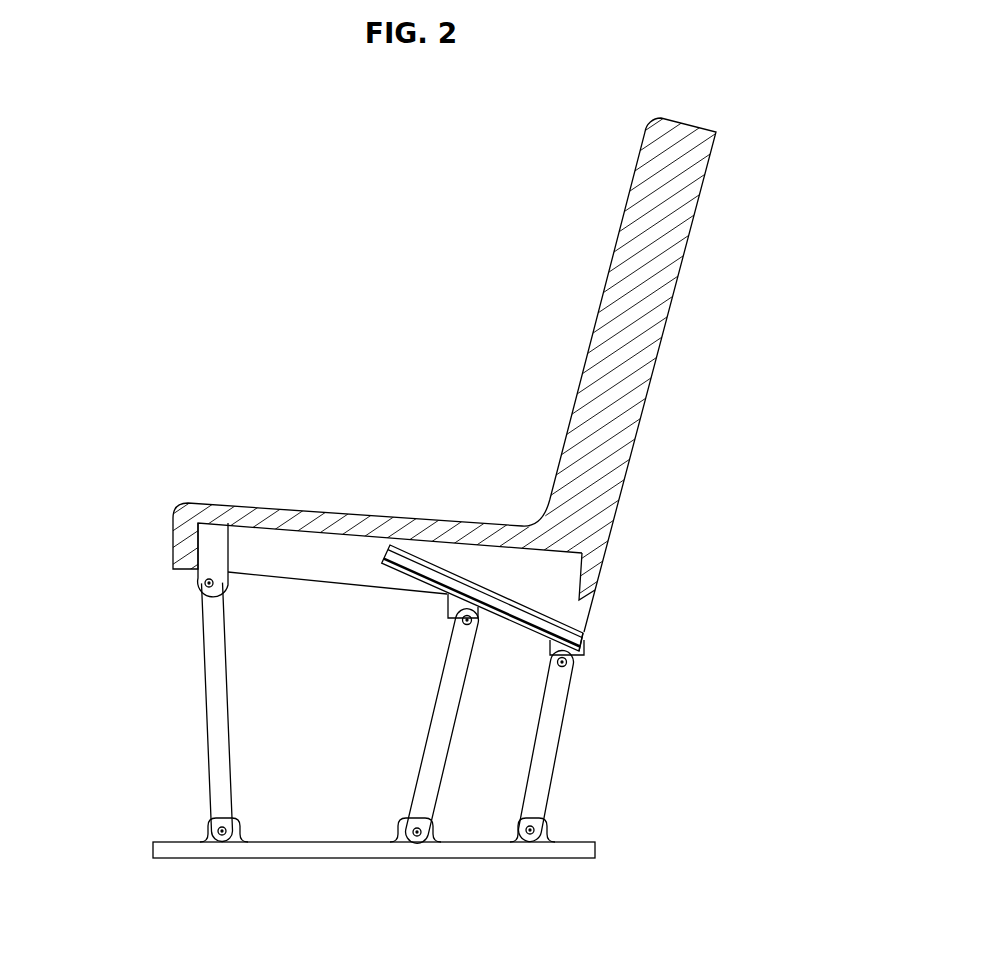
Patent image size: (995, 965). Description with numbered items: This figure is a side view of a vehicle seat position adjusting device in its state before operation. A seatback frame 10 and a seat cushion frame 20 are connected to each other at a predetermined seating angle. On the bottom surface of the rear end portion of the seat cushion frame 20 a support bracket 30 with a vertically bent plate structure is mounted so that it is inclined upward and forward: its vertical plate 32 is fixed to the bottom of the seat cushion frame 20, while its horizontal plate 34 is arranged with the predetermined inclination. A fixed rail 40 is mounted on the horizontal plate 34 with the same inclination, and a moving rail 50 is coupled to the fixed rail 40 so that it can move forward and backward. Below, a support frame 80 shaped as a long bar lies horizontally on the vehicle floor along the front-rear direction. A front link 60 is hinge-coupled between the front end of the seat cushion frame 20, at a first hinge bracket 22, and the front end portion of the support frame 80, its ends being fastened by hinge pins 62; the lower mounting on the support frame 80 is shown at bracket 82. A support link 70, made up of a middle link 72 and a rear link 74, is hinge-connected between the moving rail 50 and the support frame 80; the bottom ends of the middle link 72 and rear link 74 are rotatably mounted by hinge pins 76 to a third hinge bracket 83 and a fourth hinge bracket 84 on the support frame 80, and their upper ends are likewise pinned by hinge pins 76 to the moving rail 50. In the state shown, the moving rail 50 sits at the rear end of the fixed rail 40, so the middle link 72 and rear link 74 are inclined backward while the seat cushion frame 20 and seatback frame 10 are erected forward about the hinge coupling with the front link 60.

The seatback frame 10 is at (603, 327).
The seat cushion frame 20 is at (338, 524).
The first hinge bracket 22 is at (205, 560).
The support bracket 30 is at (694, 537).
The vertical plate 32 is at (503, 577).
The horizontal plate 34 is at (527, 603).
The fixed rail 40 is at (568, 632).
The moving rail 50 is at (513, 636).
The front link 60 is at (206, 697).
The hinge pin 62 is at (207, 584).
The support link 70 is at (560, 726).
The middle link 72 is at (540, 768).
The rear link 74 is at (437, 742).
The hinge pin 76 is at (462, 621).
The support frame 80 is at (513, 857).
The front mounting bracket 82 is at (232, 827).
The third hinge bracket 83 is at (420, 830).
The fourth hinge bracket 84 is at (533, 836).